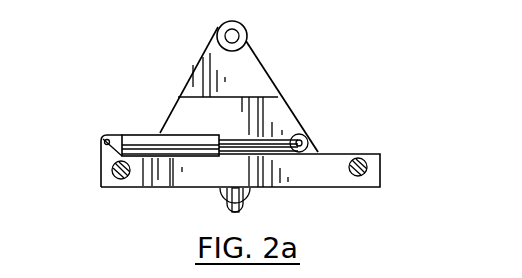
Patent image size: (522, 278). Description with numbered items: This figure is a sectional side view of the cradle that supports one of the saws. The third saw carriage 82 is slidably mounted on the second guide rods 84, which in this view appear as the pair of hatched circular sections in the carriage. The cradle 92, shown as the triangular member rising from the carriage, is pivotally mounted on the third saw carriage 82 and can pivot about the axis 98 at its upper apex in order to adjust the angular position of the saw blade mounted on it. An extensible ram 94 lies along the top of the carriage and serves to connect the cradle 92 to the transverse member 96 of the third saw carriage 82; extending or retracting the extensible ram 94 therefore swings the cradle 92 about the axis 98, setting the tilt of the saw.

The third saw carriage 82 is at (299, 180).
The second guide rods 84 is at (112, 169).
The cradle 92 is at (203, 67).
The extensible ram 94 is at (143, 135).
The transverse member 96 is at (142, 185).
The axis 98 is at (233, 36).